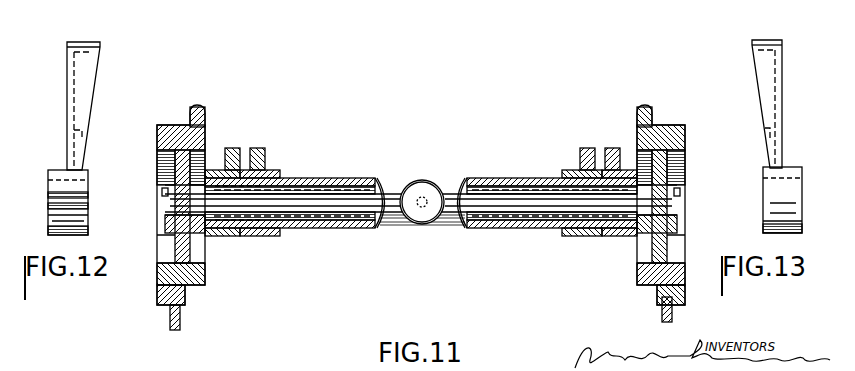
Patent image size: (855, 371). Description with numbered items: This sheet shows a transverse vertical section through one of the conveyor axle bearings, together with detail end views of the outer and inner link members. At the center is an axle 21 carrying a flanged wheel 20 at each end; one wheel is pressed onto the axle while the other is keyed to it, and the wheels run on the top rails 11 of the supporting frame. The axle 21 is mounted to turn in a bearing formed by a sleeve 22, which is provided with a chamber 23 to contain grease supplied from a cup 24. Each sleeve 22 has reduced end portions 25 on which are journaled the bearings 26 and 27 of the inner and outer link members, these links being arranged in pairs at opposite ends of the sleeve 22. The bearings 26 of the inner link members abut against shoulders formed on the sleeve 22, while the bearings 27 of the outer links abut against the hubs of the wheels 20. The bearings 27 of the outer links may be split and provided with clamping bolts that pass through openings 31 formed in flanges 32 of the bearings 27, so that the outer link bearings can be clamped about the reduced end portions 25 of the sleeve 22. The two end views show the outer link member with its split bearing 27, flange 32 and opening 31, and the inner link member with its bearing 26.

In FIG. 11, the top rails 11 is at (170, 318).
In FIG. 11, the flanged wheels 20 is at (178, 126).
In FIG. 11, the axles 21 is at (288, 192).
In FIG. 11, the sleeve 22 is at (353, 180).
In FIG. 11, the chamber 23 is at (334, 226).
In FIG. 11, the cup 24 is at (423, 208).
In FIG. 11, the reduced end portions 25 is at (263, 170).
In FIG. 11, the bearings of inner link members 26 is at (234, 238).
In FIG. 12, the bearings of inner link members 26 is at (88, 188).
In FIG. 11, the bearings of outer link members 27 is at (268, 238).
In FIG. 13, the bearings of outer link members 27 is at (765, 203).
In FIG. 12, the openings 31 is at (88, 206).
In FIG. 12, the flanges 32 is at (66, 197).